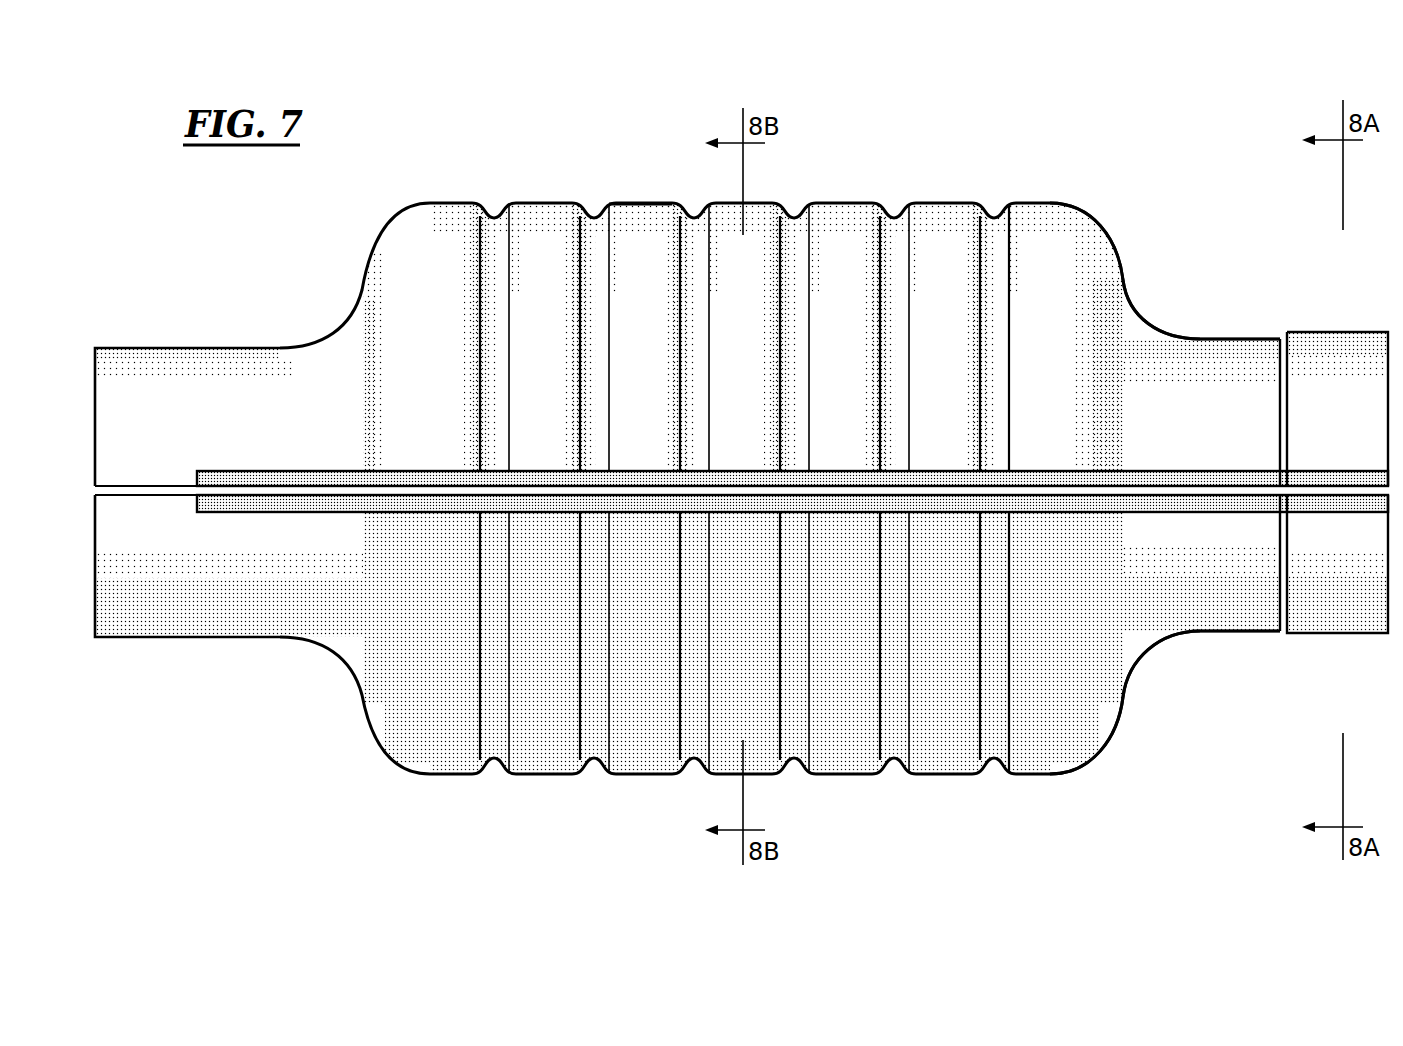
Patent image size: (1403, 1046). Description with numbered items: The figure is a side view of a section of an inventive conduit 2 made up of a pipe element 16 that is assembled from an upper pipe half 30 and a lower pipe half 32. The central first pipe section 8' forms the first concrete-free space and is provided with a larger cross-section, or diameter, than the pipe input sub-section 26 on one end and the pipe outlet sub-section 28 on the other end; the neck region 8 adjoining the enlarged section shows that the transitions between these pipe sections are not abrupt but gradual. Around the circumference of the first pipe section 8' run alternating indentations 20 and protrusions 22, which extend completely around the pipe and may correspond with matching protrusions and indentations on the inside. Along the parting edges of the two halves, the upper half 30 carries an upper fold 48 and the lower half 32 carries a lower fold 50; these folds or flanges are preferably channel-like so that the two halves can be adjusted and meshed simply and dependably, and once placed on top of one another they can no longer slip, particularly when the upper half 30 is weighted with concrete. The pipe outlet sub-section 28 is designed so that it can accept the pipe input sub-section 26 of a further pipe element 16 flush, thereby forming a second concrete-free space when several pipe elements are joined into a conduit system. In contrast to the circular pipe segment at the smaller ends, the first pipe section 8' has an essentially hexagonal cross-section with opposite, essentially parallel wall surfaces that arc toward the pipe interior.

The conduit 2 is at (932, 188).
The pipe element 16 is at (1035, 242).
The indentations 20 is at (493, 217).
The protrusions 22 is at (637, 203).
The first pipe section 8' is at (1136, 271).
The neck portion 8 is at (1267, 445).
The upper pipe half 30 is at (1338, 362).
The lower pipe half 32 is at (1347, 587).
The upper fold 48 is at (1340, 470).
The lower fold 50 is at (1313, 495).
The pipe outlet sub-section 28 is at (203, 603).
The pipe input sub-section 26 is at (1177, 587).